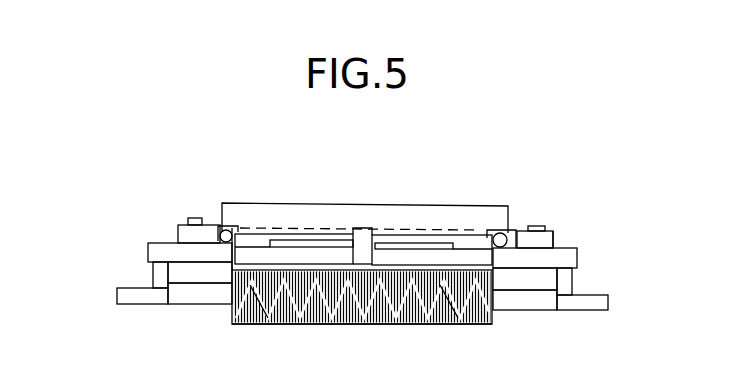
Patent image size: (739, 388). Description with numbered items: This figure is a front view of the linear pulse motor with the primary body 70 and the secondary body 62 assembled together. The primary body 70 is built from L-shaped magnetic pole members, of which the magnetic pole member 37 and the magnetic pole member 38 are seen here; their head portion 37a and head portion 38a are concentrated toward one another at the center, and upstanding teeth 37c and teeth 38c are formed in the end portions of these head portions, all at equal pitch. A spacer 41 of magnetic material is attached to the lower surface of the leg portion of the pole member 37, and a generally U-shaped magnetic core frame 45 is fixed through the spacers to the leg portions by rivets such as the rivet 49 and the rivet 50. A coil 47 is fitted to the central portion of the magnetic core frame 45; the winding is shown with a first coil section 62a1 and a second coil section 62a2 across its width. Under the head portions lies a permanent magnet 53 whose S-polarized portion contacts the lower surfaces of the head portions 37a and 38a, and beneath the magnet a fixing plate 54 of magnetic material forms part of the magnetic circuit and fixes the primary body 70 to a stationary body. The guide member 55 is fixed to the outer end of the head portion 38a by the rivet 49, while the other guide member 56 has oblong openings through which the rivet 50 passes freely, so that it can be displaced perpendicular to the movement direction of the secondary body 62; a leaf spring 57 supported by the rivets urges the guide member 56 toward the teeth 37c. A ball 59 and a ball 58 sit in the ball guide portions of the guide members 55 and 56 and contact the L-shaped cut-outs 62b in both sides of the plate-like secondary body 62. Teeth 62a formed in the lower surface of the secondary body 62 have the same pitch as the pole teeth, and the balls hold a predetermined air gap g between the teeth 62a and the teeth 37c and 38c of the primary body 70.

The primary body 70 is at (468, 151).
The teeth 38c is at (309, 245).
The teeth 37c is at (394, 244).
The secondary body 62 is at (373, 218).
The air gap g is at (363, 263).
The cut-outs 62b is at (247, 240).
The ball 59 is at (227, 228).
The ball 58 is at (513, 232).
The guide member 55 is at (183, 233).
The rivet 49 is at (192, 219).
The guide member 56 is at (542, 233).
The rivet 50 is at (540, 229).
The leaf spring 57 is at (553, 240).
The magnetic pole member 38 is at (183, 250).
The permanent magnet 53 is at (158, 275).
The fixing plate 54 is at (127, 297).
The magnetic core frame 45 is at (202, 292).
The magnetic pole member 37 is at (543, 257).
The spacer 41 is at (548, 279).
The coil 47 is at (492, 325).
The teeth 62a is at (373, 325).
The first coil section 62a1 is at (267, 325).
The second coil section 62a2 is at (437, 325).
The head portion 38a is at (298, 325).
The head portion 37a is at (475, 325).